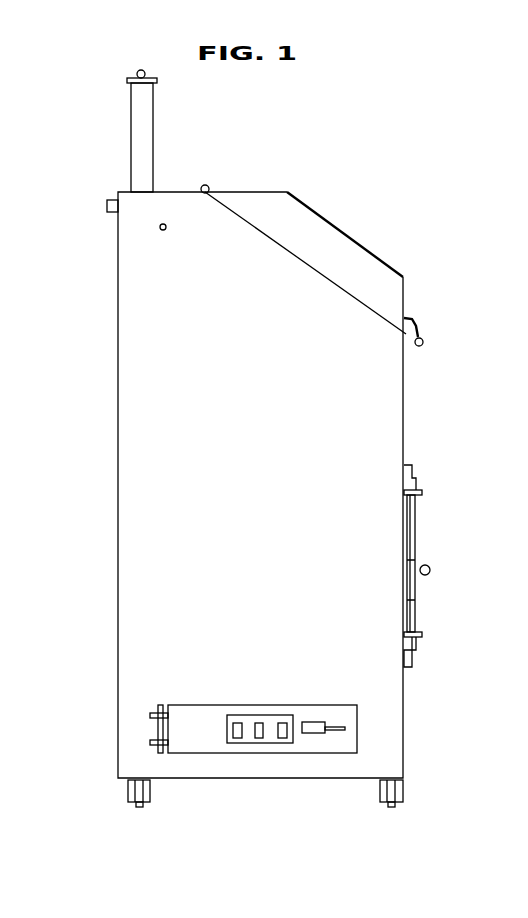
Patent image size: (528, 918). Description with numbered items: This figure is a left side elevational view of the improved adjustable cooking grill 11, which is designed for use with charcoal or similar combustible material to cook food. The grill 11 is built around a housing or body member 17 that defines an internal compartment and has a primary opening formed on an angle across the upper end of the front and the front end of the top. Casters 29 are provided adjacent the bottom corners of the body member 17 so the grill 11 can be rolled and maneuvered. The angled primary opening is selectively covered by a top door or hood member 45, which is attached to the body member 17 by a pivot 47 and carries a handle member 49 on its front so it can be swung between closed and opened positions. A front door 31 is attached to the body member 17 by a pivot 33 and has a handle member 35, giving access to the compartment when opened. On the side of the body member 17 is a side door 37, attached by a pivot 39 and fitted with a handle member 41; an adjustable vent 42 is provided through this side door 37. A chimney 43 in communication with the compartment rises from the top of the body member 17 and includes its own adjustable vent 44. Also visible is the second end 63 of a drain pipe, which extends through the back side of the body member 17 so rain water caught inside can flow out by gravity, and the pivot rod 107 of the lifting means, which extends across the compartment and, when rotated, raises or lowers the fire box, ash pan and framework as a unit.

The grill 11 is at (326, 128).
The body member 17 is at (408, 401).
The casters 29 is at (140, 807).
The front door 31 is at (415, 613).
The pivot 33 is at (423, 523).
The handle member 35 is at (430, 570).
The side door 37 is at (207, 743).
The pivot 39 is at (148, 732).
The handle member 41 is at (312, 735).
The adjustable vent 42 is at (272, 738).
The chimney 43 is at (150, 157).
The adjustable vent 44 is at (155, 71).
The hood member 45 is at (362, 236).
The pivot 47 is at (209, 184).
The handle member 49 is at (423, 342).
The second end 63 is at (112, 199).
The pivot rod 107 is at (160, 228).